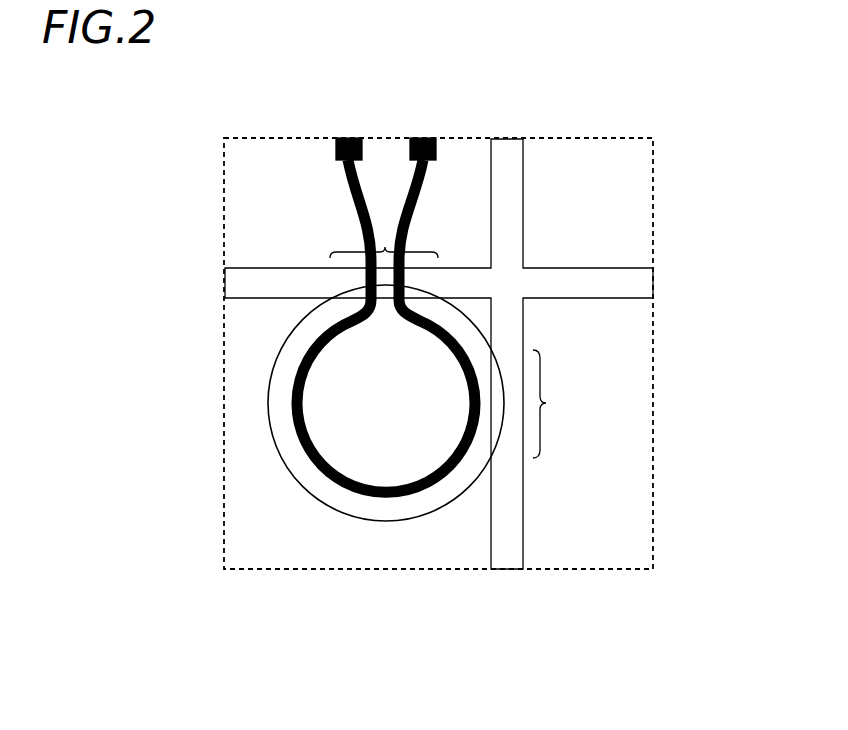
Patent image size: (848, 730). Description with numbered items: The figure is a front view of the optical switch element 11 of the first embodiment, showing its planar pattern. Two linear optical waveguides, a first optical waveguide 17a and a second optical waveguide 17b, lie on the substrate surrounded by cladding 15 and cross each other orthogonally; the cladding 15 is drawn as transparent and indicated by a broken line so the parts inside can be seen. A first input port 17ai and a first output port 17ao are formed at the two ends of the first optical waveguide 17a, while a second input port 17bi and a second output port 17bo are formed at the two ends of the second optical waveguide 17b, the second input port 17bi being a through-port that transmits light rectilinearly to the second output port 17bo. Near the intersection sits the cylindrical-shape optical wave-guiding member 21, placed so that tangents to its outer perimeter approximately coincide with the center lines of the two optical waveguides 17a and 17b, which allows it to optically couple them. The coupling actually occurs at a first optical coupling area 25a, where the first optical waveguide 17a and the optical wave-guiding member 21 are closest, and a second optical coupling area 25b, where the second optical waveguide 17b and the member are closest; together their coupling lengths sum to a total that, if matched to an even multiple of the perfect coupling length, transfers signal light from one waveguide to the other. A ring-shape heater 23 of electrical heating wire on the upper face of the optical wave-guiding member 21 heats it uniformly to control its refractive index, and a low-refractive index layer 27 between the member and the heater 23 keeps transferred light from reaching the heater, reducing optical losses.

The optical switch element 11 is at (686, 147).
The cladding 15 is at (238, 544).
The first optical waveguide 17a is at (594, 280).
The second optical waveguide 17b is at (505, 518).
The first input port 17ai is at (224, 283).
The first output port 17ao is at (656, 283).
The second input port 17bi is at (507, 139).
The second output port 17bo is at (507, 572).
The optical wave-guiding member 21 is at (281, 475).
The heater 23 is at (290, 365).
The first optical coupling area 25a is at (386, 247).
The second optical coupling area 25b is at (546, 403).
The low-refractive index layer 27 is at (290, 403).